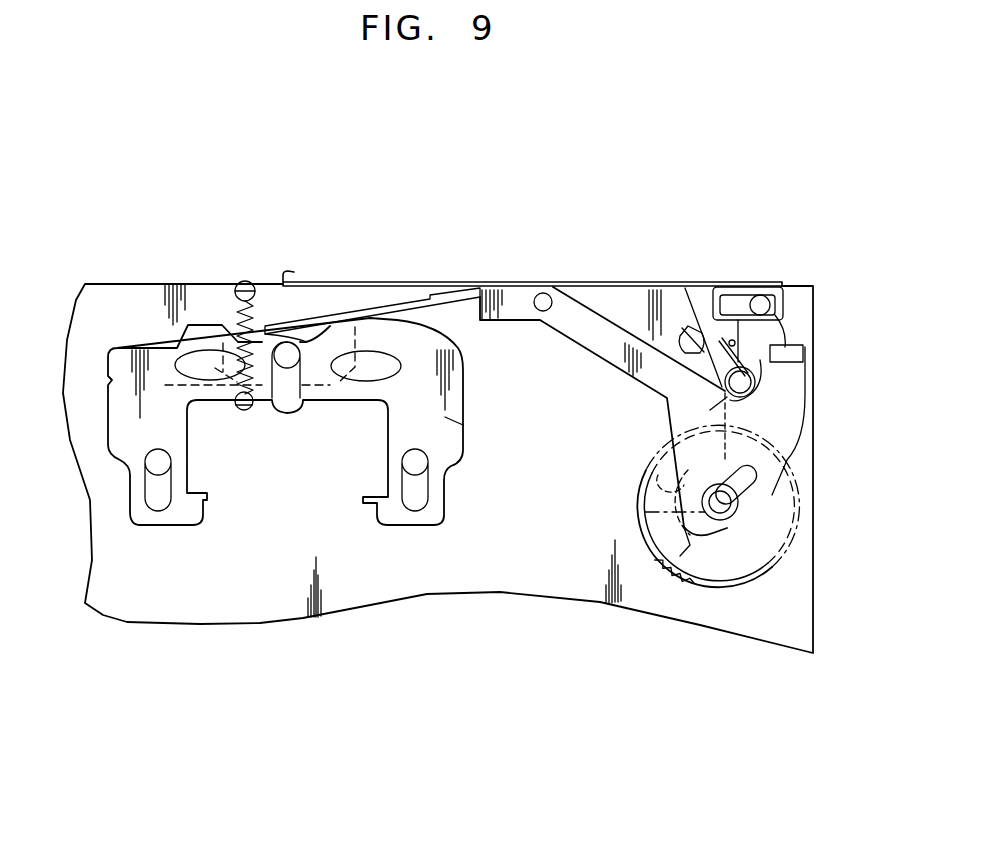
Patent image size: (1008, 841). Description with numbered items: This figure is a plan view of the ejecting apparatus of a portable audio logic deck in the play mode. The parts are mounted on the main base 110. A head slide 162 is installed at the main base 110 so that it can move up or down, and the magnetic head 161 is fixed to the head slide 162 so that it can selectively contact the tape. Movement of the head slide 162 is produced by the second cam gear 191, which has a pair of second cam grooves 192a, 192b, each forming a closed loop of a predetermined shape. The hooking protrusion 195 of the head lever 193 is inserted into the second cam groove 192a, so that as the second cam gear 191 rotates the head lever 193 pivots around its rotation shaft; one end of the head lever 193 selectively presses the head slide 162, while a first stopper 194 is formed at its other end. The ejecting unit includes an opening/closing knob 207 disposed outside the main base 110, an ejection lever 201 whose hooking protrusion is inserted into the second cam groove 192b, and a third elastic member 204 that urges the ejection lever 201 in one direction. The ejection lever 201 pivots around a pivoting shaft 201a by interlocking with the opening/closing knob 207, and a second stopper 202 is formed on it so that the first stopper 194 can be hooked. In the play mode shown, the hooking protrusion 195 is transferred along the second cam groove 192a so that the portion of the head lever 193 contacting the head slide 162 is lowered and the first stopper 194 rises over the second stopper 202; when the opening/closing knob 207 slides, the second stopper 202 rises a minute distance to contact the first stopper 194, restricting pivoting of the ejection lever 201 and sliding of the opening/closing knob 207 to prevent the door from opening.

The main base 110 is at (254, 589).
The magnetic head 161 is at (340, 348).
The head slide 162 is at (445, 417).
The second cam gear 191 is at (746, 589).
The second cam groove 192a is at (775, 492).
The second cam groove 192b is at (803, 545).
The head lever 193 is at (585, 330).
The first stopper 194 is at (785, 345).
The hooking protrusion 195 is at (678, 573).
The ejection lever 201 is at (777, 335).
The pivoting shaft 201a is at (748, 384).
The second stopper 202 is at (803, 360).
The third elastic member 204 is at (718, 290).
The opening/closing knob 207 is at (582, 285).